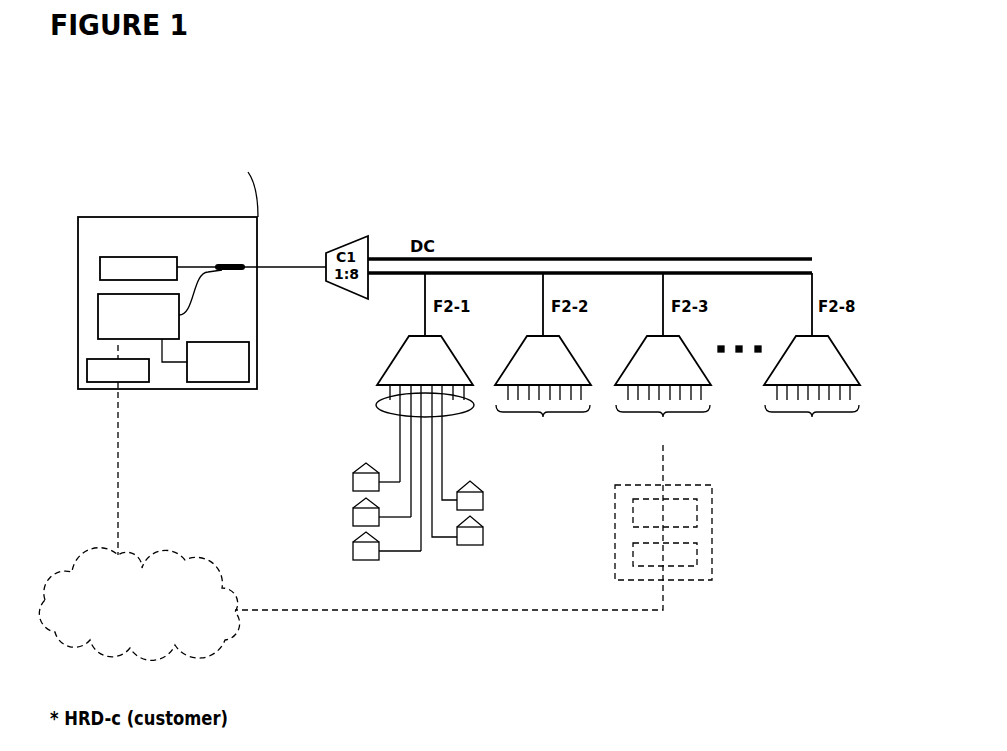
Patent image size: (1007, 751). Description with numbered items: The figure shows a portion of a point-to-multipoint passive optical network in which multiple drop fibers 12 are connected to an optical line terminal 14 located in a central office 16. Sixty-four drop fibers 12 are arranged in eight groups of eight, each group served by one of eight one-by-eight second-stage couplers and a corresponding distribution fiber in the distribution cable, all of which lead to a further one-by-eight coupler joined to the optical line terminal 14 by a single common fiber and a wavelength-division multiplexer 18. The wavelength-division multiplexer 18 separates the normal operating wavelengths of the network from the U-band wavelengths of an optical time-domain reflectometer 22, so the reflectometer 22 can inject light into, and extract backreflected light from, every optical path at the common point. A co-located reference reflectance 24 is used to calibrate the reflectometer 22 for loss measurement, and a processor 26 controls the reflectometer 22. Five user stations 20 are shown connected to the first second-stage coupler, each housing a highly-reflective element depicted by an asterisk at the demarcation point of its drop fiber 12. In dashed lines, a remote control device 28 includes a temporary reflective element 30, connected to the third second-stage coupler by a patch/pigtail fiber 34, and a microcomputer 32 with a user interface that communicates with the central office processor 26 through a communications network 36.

The optical line terminal 14 is at (100, 268).
The central office 16 is at (243, 185).
The wavelength-division multiplexer 18 is at (242, 268).
The OTDR 22 is at (179, 325).
The reference reflectance 24 is at (249, 360).
The processor 26 is at (87, 370).
The drop fibers 12 is at (376, 405).
The user stations 20 is at (353, 480).
The remote control device 28 is at (712, 487).
The temporary reflective element 30 is at (697, 518).
The microcomputer 32 is at (697, 562).
The patch/pigtail fiber 34 is at (663, 457).
The communications network 36 is at (230, 628).